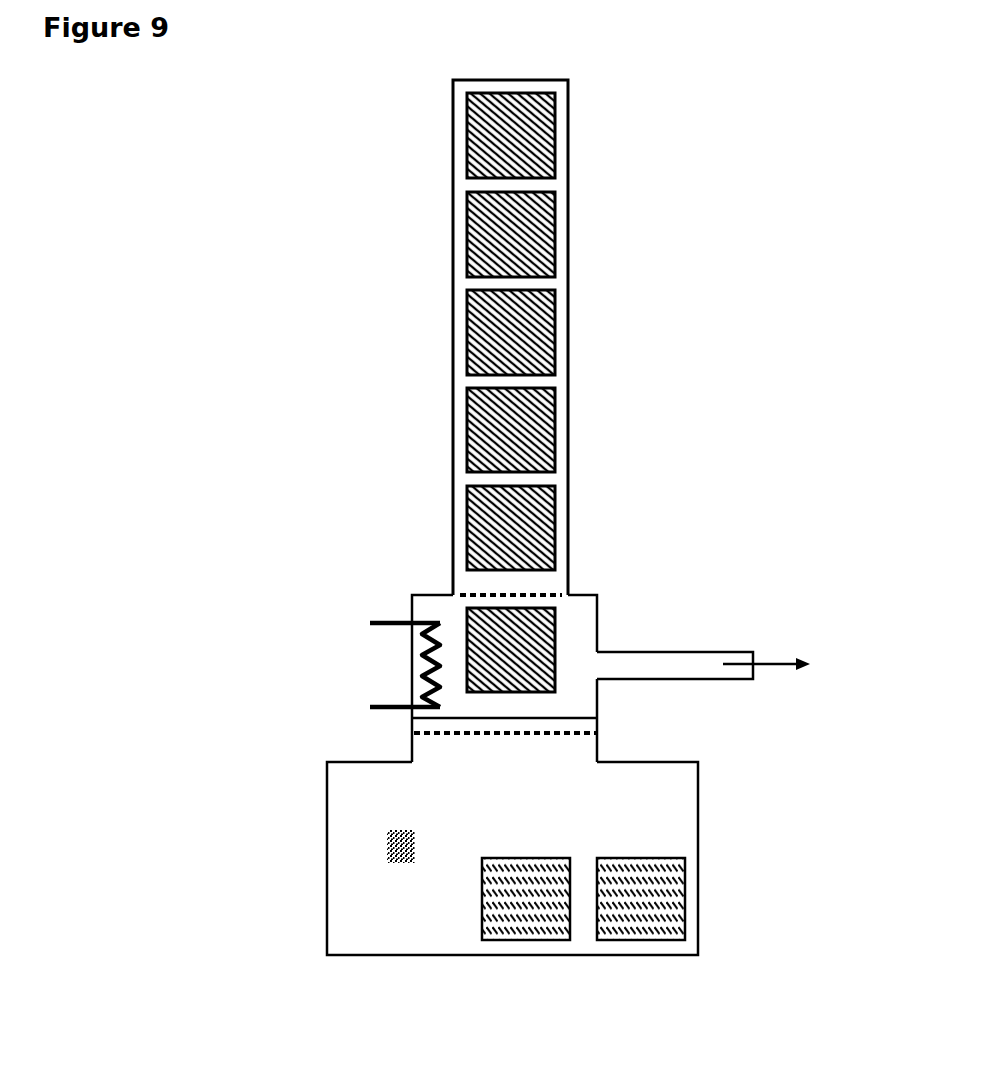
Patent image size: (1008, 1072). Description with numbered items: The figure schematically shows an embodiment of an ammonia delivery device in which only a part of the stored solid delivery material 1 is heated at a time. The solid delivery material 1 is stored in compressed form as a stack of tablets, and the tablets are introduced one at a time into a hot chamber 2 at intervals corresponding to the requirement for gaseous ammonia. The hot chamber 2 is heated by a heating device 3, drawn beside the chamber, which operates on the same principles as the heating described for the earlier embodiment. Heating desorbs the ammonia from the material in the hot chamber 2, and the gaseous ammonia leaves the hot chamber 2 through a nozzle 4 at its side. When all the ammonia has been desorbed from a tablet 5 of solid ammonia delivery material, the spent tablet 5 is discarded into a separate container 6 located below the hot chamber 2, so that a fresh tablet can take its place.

The solid delivery material 1 is at (527, 636).
The hot chamber 2 is at (576, 648).
The heating device 3 is at (392, 702).
The nozzle 4 is at (724, 673).
The tablet 5 is at (520, 895).
The separate container 6 is at (390, 848).